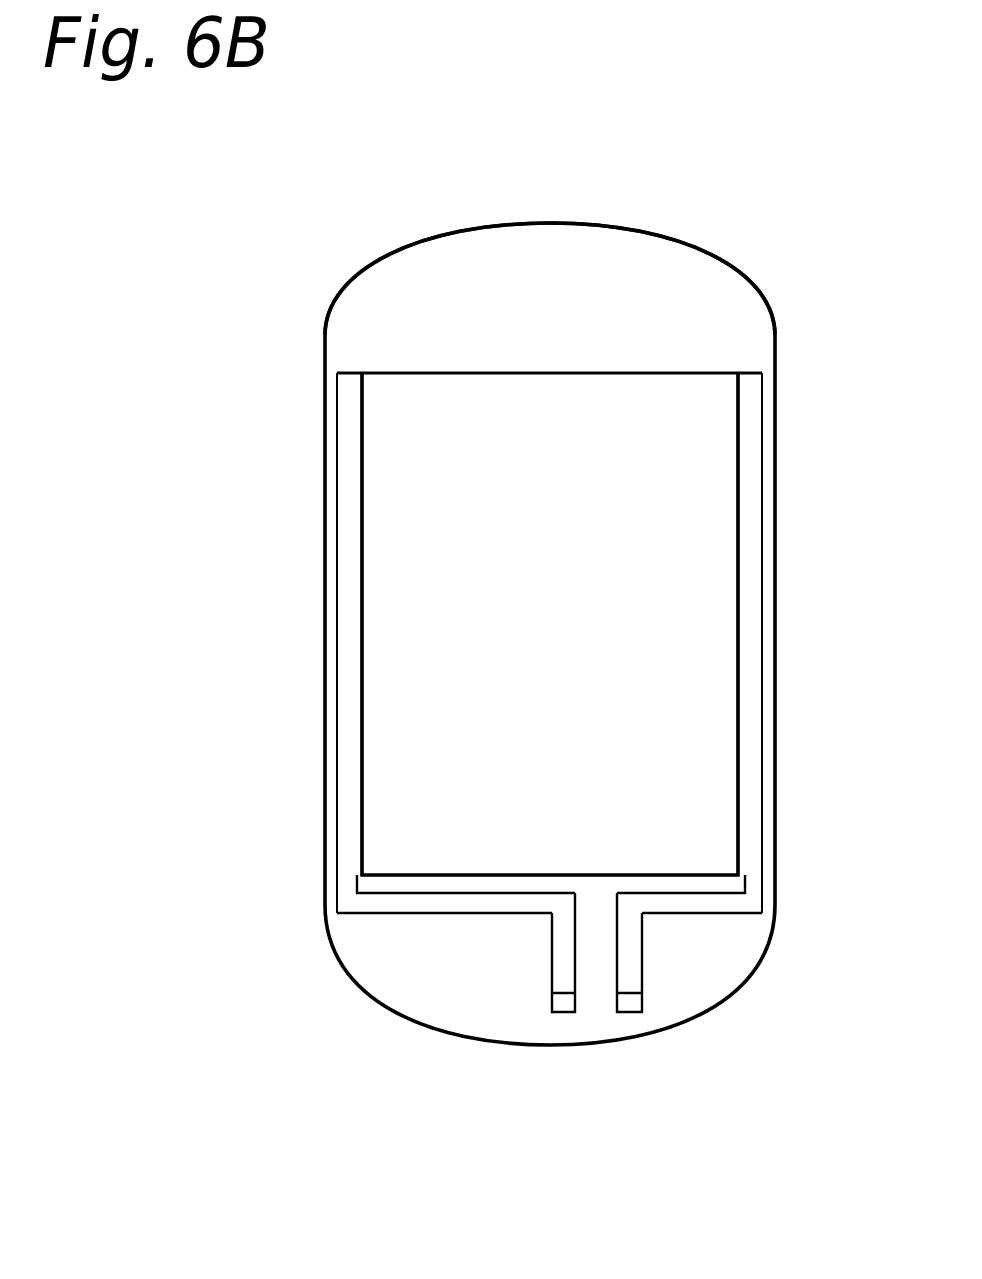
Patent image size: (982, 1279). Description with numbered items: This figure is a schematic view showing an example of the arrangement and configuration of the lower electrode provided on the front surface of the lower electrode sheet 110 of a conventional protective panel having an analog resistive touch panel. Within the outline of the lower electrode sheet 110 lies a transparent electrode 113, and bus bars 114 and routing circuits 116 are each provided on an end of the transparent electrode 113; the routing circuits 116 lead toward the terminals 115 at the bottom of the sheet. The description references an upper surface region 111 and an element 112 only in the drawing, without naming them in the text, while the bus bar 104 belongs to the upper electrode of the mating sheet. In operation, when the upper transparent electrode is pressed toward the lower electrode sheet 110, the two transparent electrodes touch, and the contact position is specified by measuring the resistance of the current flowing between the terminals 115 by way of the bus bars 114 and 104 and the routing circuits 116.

The bus bar 104 is at (400, 362).
The lower electrode sheet 110 is at (712, 297).
The top portion of battery case 111 is at (585, 252).
The electrode assembly 112 is at (690, 548).
The transparent electrode 113 is at (582, 755).
The bus bar 114 is at (352, 662).
The terminal 115 is at (562, 1003).
The routing circuit 116 is at (393, 905).